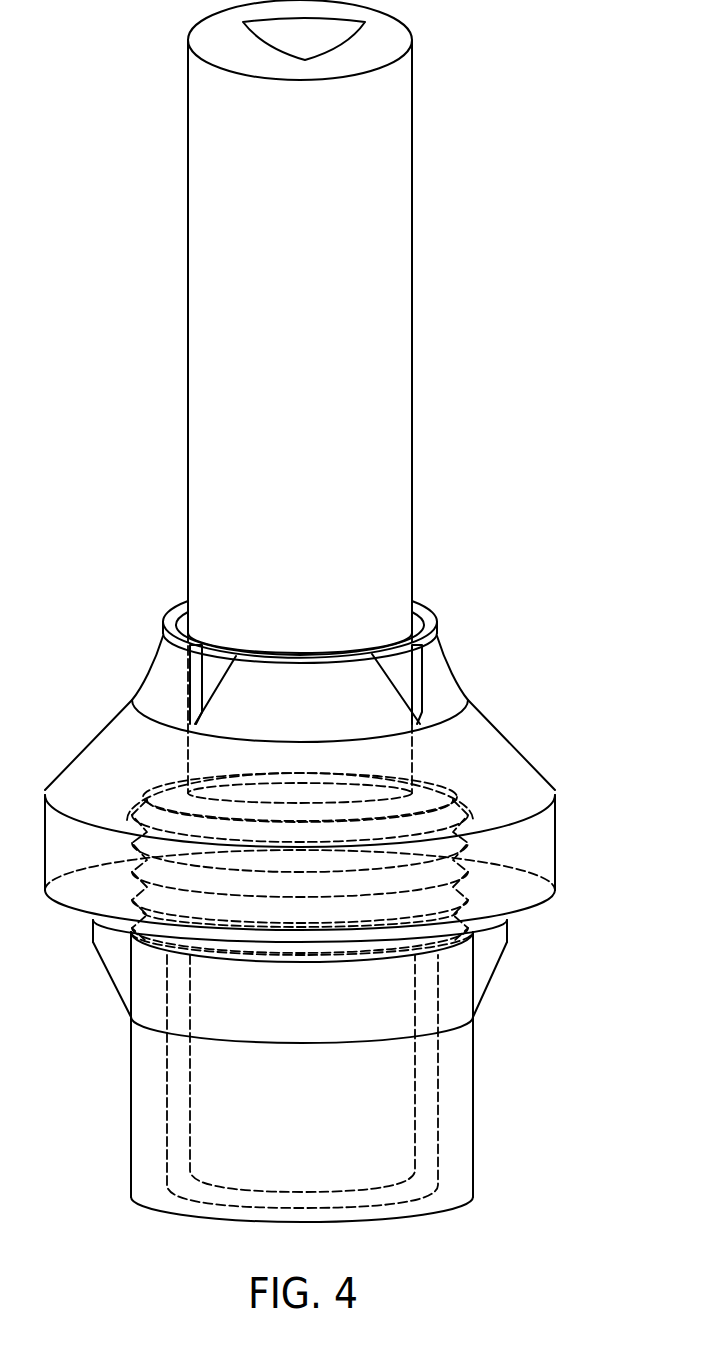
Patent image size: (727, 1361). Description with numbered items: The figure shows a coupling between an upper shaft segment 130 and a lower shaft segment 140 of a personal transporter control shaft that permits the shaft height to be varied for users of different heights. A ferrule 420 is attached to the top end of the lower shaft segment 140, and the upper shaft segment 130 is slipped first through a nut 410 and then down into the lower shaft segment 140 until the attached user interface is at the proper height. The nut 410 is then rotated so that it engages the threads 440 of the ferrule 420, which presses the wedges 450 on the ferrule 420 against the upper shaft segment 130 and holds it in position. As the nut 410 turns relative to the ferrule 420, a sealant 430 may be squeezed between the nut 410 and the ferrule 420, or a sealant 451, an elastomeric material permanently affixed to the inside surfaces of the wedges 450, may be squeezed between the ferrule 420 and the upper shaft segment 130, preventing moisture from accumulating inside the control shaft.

The upper shaft segment 130 is at (414, 86).
The lower shaft segment 140 is at (476, 1122).
The nut 410 is at (500, 740).
The ferrule 420 is at (503, 930).
The sealant 430 is at (122, 933).
The threads 440 is at (473, 872).
The wedges 450 is at (445, 653).
The sealant 451 is at (182, 622).